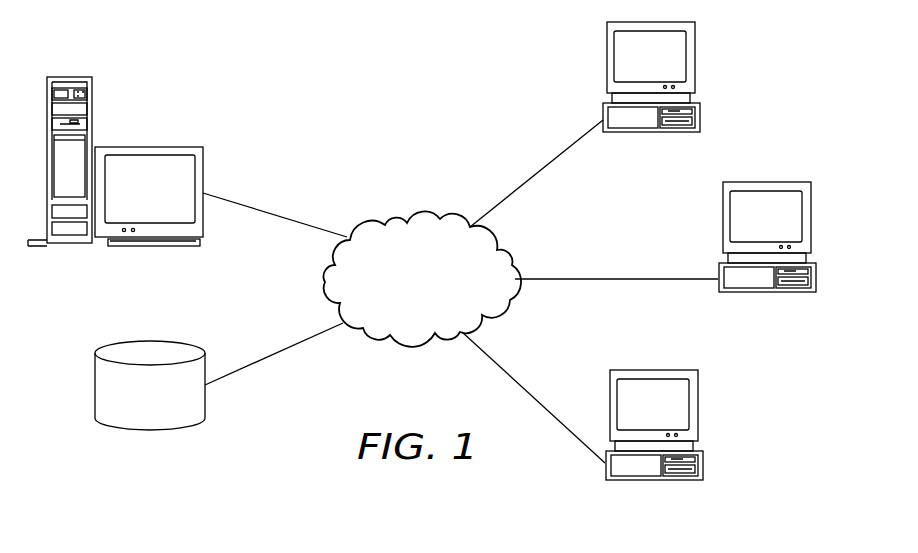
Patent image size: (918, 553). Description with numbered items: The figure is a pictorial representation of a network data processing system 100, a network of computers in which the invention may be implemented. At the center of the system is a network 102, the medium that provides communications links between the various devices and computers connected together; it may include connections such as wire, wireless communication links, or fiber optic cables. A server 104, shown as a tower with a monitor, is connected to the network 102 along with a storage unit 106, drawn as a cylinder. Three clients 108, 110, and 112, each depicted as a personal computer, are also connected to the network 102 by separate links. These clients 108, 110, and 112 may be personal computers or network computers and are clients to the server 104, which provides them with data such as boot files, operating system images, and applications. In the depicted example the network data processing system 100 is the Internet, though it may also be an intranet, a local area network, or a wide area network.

The network data processing system 100 is at (292, 88).
The network 102 is at (440, 304).
The server 104 is at (92, 100).
The storage unit 106 is at (94, 388).
The client 108 is at (696, 65).
The client 110 is at (811, 222).
The client 112 is at (698, 410).